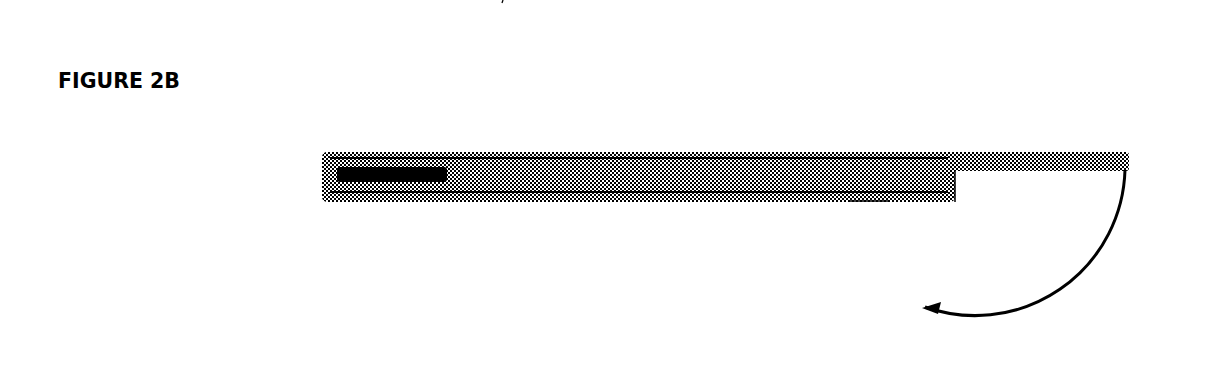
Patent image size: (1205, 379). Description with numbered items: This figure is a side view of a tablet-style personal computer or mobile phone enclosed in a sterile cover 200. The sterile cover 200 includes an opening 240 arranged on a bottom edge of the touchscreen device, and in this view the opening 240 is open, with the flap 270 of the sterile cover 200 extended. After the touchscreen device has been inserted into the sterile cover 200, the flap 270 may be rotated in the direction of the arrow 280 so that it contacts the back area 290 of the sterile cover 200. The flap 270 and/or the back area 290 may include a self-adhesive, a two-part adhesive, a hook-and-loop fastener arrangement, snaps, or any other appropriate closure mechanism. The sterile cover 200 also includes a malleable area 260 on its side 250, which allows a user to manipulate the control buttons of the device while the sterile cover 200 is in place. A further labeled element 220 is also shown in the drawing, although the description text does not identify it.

The sterile cover 200 is at (790, 107).
The display layer 220 is at (508, 14).
The opening 240 is at (950, 178).
The side 250 is at (608, 178).
The malleable area 260 is at (407, 180).
The flap 270 is at (1012, 152).
The arrow 280 is at (1085, 272).
The back area 290 is at (868, 193).